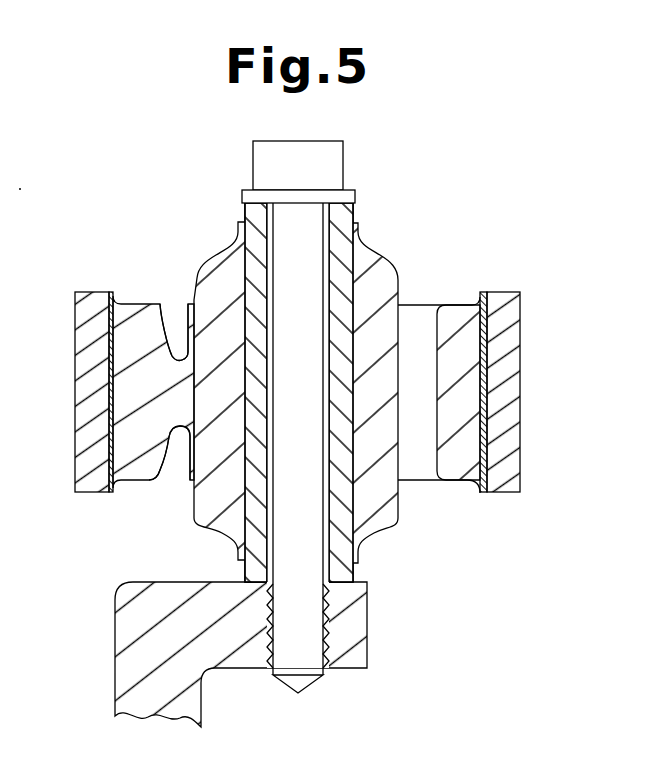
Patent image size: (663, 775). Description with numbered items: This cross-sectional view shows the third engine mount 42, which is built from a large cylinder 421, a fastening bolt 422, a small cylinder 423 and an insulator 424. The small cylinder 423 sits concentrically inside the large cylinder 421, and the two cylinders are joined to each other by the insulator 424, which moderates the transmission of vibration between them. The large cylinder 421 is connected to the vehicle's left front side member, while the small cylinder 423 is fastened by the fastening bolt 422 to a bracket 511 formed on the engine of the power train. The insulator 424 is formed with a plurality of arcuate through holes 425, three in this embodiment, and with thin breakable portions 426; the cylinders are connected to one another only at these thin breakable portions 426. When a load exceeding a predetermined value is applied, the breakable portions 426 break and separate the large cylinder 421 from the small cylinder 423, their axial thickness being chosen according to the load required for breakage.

The third engine mount 42 is at (340, 403).
The large cylinder 421 is at (520, 357).
The fastening bolt 422 is at (317, 141).
The small cylinder 423 is at (243, 206).
The insulator 424 is at (398, 270).
The arcuate through hole 425 is at (425, 324).
The thin breakable portion 426 is at (178, 357).
The bracket 511 is at (368, 617).